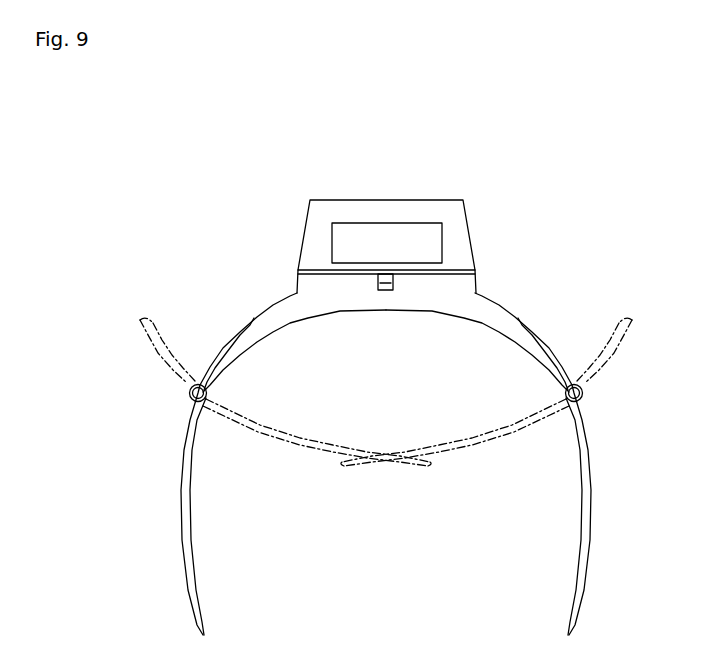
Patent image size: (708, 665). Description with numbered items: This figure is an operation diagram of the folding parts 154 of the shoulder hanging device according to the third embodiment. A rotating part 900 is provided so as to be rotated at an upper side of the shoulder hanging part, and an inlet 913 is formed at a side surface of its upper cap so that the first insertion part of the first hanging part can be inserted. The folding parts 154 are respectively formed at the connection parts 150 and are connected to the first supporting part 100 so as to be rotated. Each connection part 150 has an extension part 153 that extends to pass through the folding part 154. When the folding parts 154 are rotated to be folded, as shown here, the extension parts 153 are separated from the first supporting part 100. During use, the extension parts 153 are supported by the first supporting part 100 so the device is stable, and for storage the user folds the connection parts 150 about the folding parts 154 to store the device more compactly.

The rotating part 900 is at (386, 192).
The inlet 913 is at (394, 247).
The first supporting part 100 is at (347, 308).
The connection part 150 is at (181, 457).
The extension part 153 is at (147, 330).
The folding part 154 is at (190, 401).